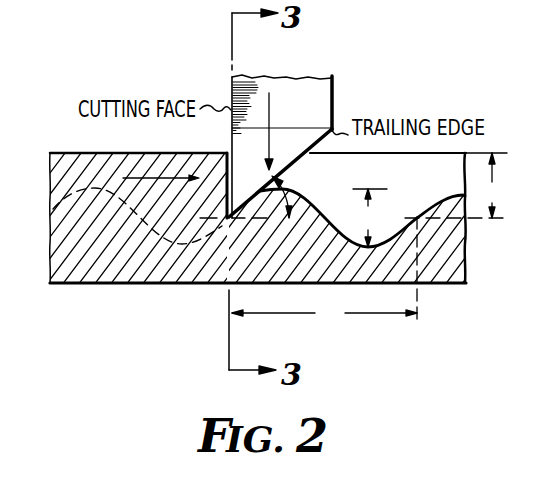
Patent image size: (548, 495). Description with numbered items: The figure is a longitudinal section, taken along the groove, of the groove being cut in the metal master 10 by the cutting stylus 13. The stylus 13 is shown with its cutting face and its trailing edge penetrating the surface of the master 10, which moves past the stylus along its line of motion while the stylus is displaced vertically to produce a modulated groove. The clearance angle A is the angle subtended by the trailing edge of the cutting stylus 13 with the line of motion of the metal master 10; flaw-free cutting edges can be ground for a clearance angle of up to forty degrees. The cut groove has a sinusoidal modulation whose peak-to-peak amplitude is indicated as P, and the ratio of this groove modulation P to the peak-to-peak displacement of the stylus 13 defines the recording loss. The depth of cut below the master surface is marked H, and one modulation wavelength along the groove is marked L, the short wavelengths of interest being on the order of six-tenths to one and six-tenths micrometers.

The metal master 10 is at (143, 272).
The cutting stylus 13 is at (299, 78).
The clearance angle A is at (299, 173).
The peak-to-peak groove modulation P is at (370, 218).
The cutting depth H is at (456, 185).
The groove wavelength L is at (324, 273).